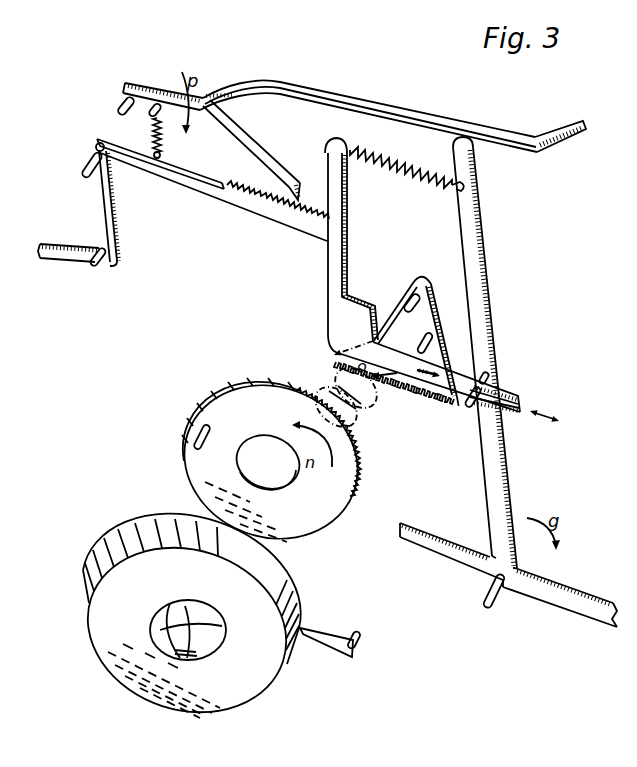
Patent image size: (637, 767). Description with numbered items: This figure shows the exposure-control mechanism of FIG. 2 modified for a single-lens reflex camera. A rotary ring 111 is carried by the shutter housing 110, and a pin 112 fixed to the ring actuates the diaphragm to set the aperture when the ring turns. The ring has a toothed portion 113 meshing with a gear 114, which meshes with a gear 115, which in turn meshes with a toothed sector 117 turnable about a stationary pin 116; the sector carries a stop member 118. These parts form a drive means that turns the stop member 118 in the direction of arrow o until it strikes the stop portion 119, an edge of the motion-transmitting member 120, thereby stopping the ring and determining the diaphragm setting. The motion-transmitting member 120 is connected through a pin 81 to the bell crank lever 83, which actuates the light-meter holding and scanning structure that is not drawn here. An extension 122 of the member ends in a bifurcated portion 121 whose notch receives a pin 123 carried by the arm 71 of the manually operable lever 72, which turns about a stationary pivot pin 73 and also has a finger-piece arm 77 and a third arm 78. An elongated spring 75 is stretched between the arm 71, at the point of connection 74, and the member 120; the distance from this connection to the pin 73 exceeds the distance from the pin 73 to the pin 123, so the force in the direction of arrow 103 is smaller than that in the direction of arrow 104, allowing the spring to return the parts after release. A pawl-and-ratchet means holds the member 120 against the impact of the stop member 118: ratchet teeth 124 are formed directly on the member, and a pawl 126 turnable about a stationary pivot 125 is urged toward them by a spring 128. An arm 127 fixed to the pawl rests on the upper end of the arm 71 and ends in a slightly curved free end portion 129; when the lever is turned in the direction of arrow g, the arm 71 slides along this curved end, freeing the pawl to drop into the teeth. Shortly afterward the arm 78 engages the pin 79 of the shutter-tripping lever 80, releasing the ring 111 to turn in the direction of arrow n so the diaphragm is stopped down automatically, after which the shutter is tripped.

The arm 71 is at (480, 337).
The lever 72 is at (513, 575).
The stationary pivot pin 73 is at (487, 597).
The point of connection 74 is at (462, 183).
The spring 75 is at (388, 158).
The arm 77 is at (590, 617).
The third arm 78 is at (422, 546).
The pin 79 is at (353, 630).
The shutter-tripping lever 80 is at (317, 637).
The pin 81 is at (91, 149).
The bell crank lever 83 is at (67, 258).
The arrow 103 is at (447, 372).
The arrow 104 is at (549, 406).
The shutter housing 110 is at (265, 683).
The rotary ring 111 is at (237, 402).
The pin 112 is at (192, 435).
The toothed portion 113 is at (355, 467).
The gear 114 is at (351, 433).
The gear 115 is at (335, 383).
The stationary pin 116 is at (415, 296).
The toothed sector 117 is at (394, 392).
The stop member 118 is at (428, 337).
The stop portion 119 is at (375, 318).
The motion-transmitting member 120 is at (328, 258).
The bifurcated portion 121 is at (493, 385).
The extension 122 is at (402, 360).
The pin 123 is at (470, 406).
The ratchet teeth 124 is at (243, 184).
The stationary pivot 125 is at (118, 100).
The pawl 126 is at (267, 160).
The arm 127 is at (413, 113).
The spring 128 is at (164, 144).
The free end portion 129 is at (557, 128).